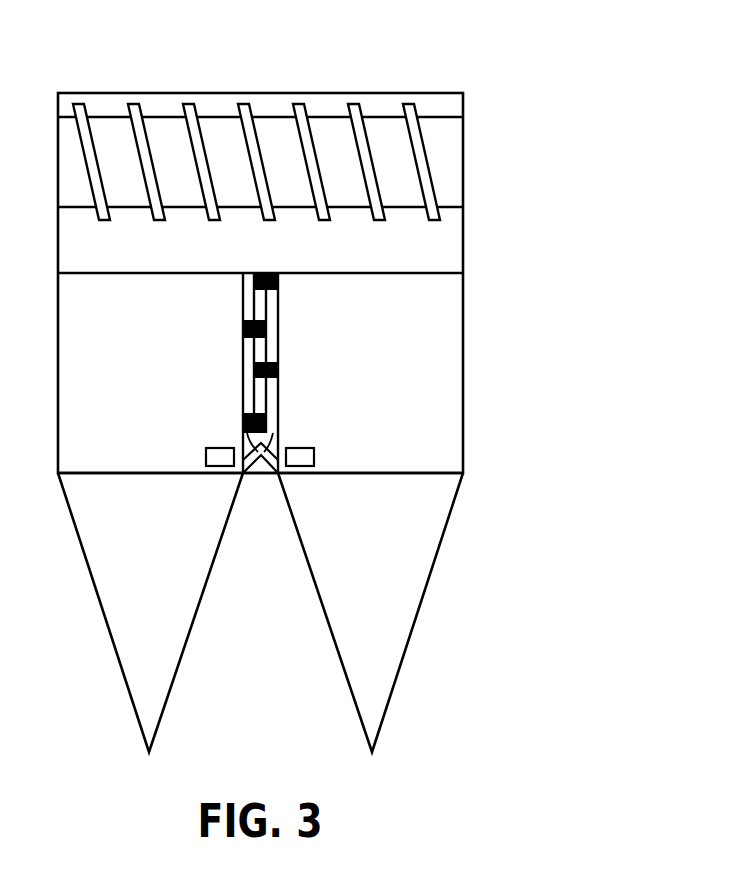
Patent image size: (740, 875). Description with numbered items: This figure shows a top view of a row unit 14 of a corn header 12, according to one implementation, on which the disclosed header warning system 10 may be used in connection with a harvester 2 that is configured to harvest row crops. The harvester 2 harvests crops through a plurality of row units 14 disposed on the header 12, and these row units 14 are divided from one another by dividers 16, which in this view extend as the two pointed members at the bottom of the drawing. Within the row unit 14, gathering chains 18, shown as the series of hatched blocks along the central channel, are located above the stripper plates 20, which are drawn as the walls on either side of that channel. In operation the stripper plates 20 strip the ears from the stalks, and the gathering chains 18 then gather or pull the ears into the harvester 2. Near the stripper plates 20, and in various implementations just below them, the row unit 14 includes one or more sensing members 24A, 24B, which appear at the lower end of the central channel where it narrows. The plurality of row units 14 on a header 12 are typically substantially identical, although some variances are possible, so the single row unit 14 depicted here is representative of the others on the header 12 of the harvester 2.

The harvester 2 is at (513, 71).
The header warning system 10 is at (552, 99).
The row unit 14 is at (575, 140).
The header 12 is at (595, 201).
The dividers 16 is at (126, 628).
The gathering chains 18 is at (243, 327).
The stripper plates 20 is at (252, 305).
The sensing member 24A is at (252, 470).
The sensing member 24B is at (268, 470).